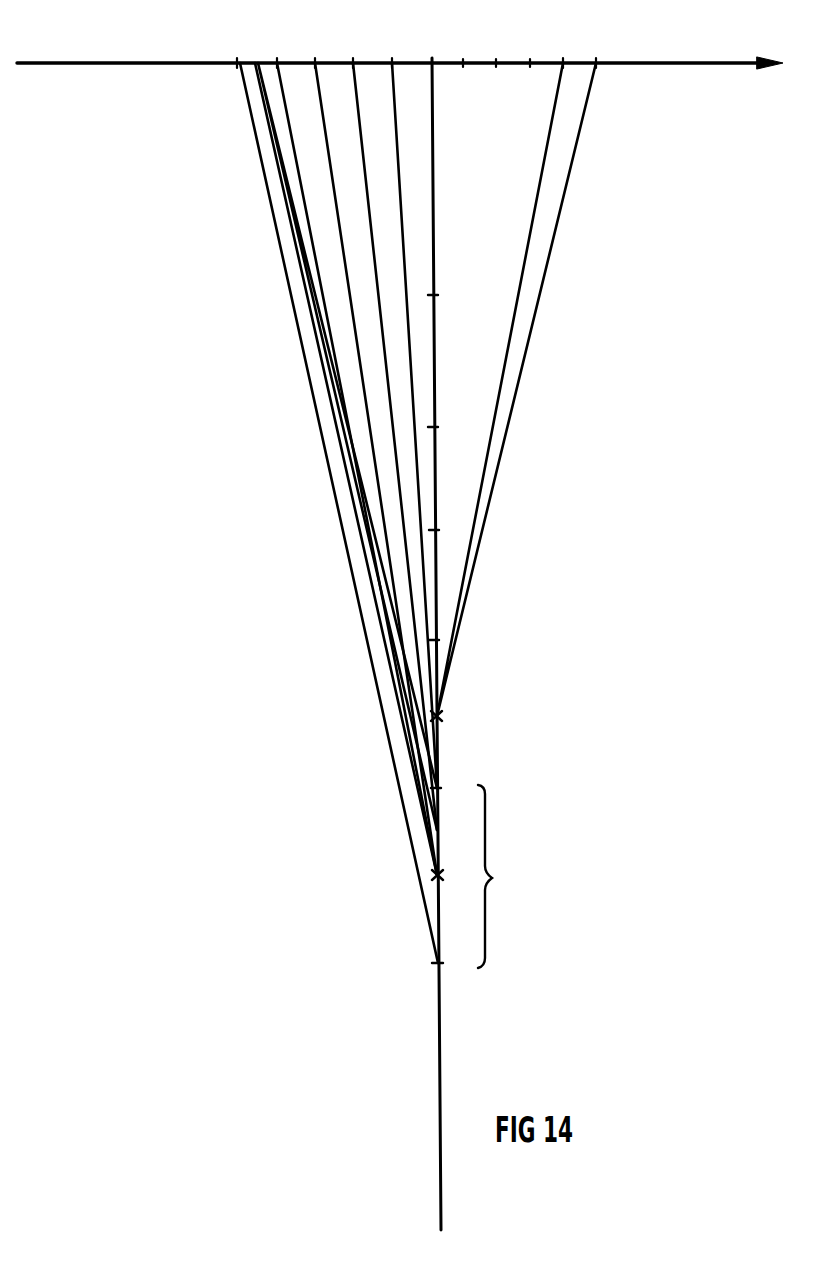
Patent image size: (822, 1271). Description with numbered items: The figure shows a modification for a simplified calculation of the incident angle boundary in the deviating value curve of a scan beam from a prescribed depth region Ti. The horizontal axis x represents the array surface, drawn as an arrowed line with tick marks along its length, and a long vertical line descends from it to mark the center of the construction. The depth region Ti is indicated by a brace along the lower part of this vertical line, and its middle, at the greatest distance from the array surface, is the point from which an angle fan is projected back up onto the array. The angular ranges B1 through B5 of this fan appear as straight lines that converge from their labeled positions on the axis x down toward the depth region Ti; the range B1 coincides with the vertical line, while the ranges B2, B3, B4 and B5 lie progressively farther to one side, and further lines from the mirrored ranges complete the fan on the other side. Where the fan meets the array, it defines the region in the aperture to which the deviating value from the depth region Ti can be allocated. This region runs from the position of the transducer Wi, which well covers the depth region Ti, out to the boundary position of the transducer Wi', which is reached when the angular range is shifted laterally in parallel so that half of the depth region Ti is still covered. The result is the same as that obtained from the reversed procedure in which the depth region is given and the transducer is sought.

The angular range B1 is at (419, 75).
The angular range B2 is at (377, 76).
The angular range B3 is at (340, 78).
The angular range B4 is at (302, 78).
The angular range B5 is at (249, 74).
The transducer Wi is at (316, 469).
The transducer Wi' is at (316, 513).
The depth region Ti is at (496, 876).
The array surface axis x is at (400, 78).